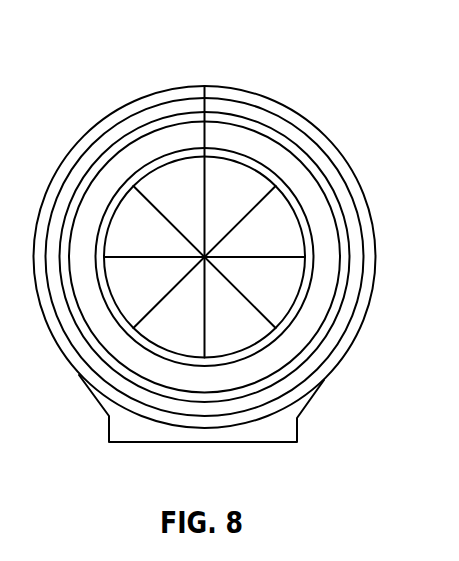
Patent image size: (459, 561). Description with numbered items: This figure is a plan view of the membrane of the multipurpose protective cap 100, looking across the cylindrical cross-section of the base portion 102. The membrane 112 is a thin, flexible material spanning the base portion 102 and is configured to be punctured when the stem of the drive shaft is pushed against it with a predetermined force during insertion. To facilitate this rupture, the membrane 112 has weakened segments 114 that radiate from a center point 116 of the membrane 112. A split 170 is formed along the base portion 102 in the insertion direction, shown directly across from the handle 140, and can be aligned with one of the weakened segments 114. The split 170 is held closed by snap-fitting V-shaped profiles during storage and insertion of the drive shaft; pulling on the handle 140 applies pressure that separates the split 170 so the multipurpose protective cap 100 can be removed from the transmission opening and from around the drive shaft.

The multipurpose protective cap 100 is at (117, 86).
The base portion 102 is at (247, 98).
The split 170 is at (203, 103).
The membrane 112 is at (125, 302).
The weakened segments 114 is at (248, 303).
The center point 116 is at (204, 257).
The handle 140 is at (130, 433).